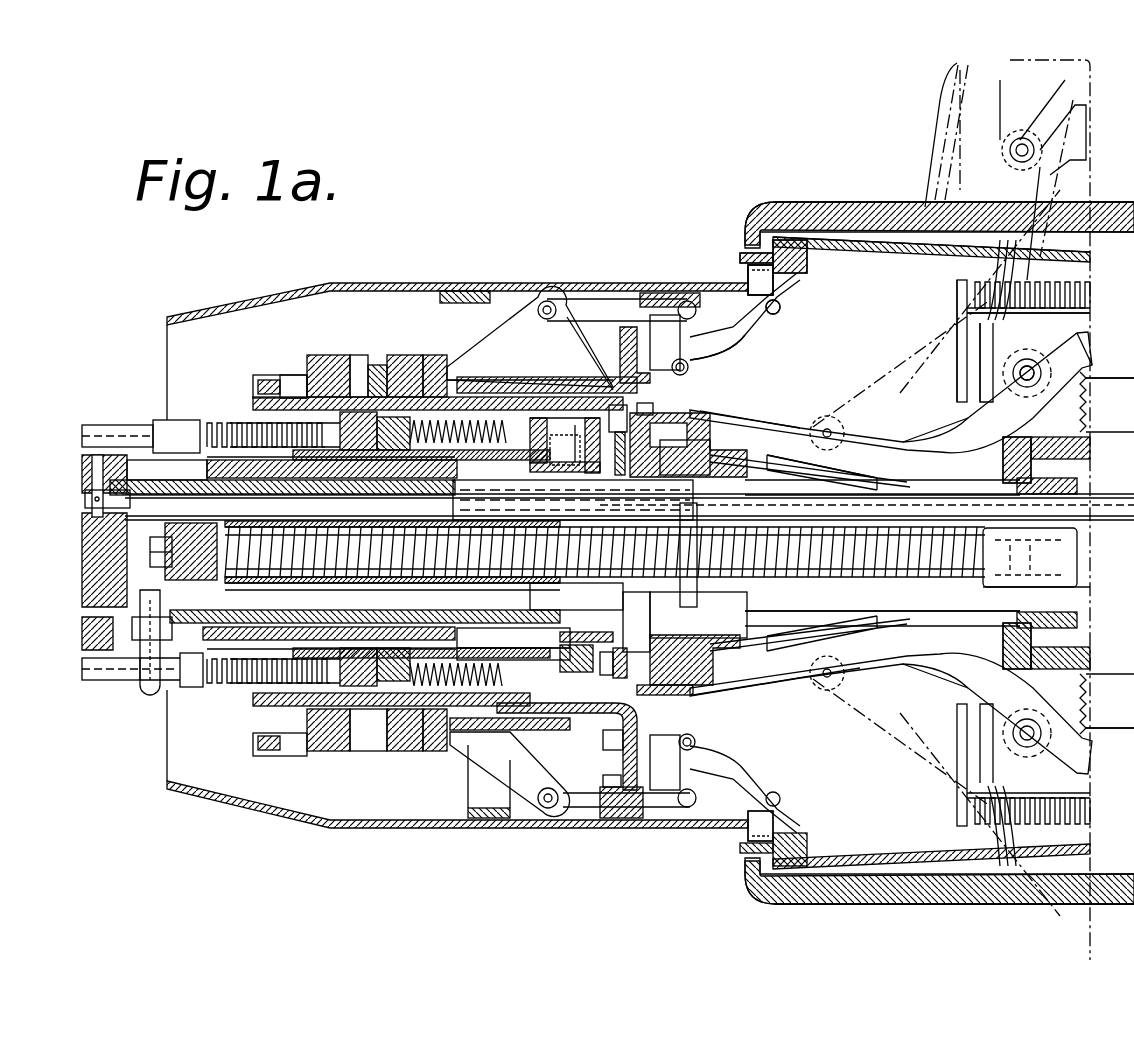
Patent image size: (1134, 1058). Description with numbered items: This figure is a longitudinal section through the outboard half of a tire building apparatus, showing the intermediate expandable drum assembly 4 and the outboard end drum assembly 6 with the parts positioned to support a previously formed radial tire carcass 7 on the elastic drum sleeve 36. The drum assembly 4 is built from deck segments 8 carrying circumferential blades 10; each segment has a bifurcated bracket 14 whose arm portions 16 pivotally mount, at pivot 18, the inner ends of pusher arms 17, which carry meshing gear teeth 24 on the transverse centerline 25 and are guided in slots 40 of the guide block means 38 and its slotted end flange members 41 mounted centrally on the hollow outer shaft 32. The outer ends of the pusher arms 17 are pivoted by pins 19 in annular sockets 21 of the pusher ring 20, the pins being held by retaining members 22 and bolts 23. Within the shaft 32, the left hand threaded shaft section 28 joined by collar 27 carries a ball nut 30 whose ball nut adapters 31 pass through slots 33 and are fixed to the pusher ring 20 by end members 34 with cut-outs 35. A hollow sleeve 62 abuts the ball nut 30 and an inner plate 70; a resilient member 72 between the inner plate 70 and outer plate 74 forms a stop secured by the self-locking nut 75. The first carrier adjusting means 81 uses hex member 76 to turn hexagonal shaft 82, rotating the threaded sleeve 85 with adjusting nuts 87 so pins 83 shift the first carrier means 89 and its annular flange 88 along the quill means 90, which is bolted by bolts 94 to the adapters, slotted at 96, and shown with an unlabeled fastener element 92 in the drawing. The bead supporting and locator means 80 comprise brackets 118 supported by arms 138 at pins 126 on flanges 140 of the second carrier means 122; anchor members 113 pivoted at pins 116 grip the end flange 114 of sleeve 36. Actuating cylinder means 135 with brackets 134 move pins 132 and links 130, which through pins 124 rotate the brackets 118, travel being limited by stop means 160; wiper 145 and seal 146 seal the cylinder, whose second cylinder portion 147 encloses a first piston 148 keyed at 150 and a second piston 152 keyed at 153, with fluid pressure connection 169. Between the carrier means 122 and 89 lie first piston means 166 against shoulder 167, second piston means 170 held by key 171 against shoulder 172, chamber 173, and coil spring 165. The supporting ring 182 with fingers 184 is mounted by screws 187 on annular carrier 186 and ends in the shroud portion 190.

The intermediate expandable drum assembly 4 is at (927, 314).
The outboard end drum assembly 6 is at (446, 234).
The tire carcass 7 is at (826, 203).
The deck segment 8 is at (946, 355).
The blade 10 is at (988, 240).
The bifurcated bracket 14 is at (1058, 352).
The arm portion 16 is at (1082, 353).
The pusher arm 17 is at (962, 438).
The pivot 18 is at (1033, 388).
The pivot pin 19 is at (702, 422).
The pusher ring 20 is at (742, 428).
The annular socket 21 is at (695, 699).
The retaining member 22 is at (672, 414).
The bolt 23 is at (650, 703).
The meshing gear teeth 24 is at (1088, 413).
The transverse centerline 25 is at (1086, 852).
The collar 27 is at (1058, 587).
The left hand threaded shaft section 28 is at (430, 650).
The ball nut 30 is at (624, 596).
The ball nut adapter 31 is at (760, 456).
The hollow outer shaft 32 is at (553, 603).
The slot 33 is at (845, 609).
The end member 34 is at (720, 600).
The cut-out 35 is at (683, 605).
The elastic drum sleeve 36 is at (878, 257).
The guide block means 38 is at (991, 465).
The slot 40 is at (1006, 668).
The slotted end flange member 41 is at (967, 378).
The hollow sleeve 62 is at (330, 585).
The inner plate 70 is at (228, 586).
The resilient member 72 is at (187, 525).
The outer plate 74 is at (165, 540).
The self-locking nut 75 is at (90, 541).
The hex member 76 is at (85, 497).
The bead supporting and locator means 80 is at (728, 261).
The first carrier adjusting means 81 is at (872, 519).
The hexagonal shaft 82 is at (1056, 525).
The pin 83 is at (590, 418).
The right hand threaded sleeve 85 is at (502, 586).
The adjusting nut 87 is at (616, 500).
The annular flange 88 is at (616, 405).
The first carrier means 89 is at (236, 455).
The quill means 90 is at (210, 455).
The screw 92 is at (651, 398).
The bolt 94 is at (565, 443).
The slot 96 is at (533, 470).
The anchor member 113 is at (800, 280).
The annular end flange 114 is at (805, 262).
The pin 116 is at (780, 308).
The bracket 118 is at (752, 328).
The second carrier means 122 is at (527, 398).
The pin 124 is at (680, 303).
The pin 126 is at (690, 368).
The link 130 is at (582, 300).
The pin 132 is at (547, 301).
The bracket 134 is at (476, 343).
The actuating cylinder means 135 is at (470, 379).
The arm 138 is at (662, 345).
The flange 140 is at (620, 340).
The wiper 145 is at (586, 736).
The seal 146 is at (488, 722).
The second cylinder portion 147 is at (378, 752).
The first piston 148 is at (445, 745).
The key 150 is at (375, 368).
The second piston 152 is at (313, 358).
The key 153 is at (298, 378).
The stop means 160 is at (255, 385).
The coil spring 165 is at (428, 412).
The first piston means 166 is at (372, 645).
The shoulder 167 is at (425, 628).
The fluid pressure connection 169 is at (496, 745).
The second piston means 170 is at (355, 360).
The key 171 is at (292, 733).
The shoulder 172 is at (335, 752).
The chamber 173 is at (395, 356).
The supporting ring 182 is at (455, 284).
The finger 184 is at (746, 290).
The annular carrier 186 is at (440, 829).
The screw 187 is at (497, 829).
The shroud portion 190 is at (186, 315).